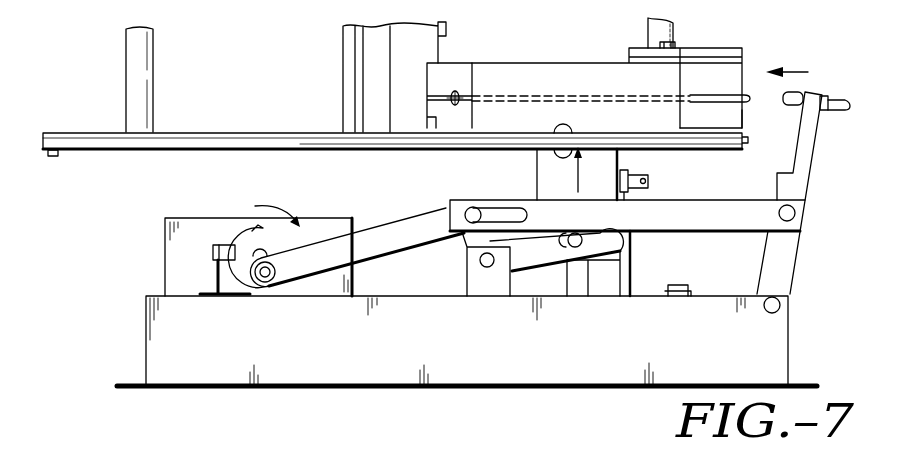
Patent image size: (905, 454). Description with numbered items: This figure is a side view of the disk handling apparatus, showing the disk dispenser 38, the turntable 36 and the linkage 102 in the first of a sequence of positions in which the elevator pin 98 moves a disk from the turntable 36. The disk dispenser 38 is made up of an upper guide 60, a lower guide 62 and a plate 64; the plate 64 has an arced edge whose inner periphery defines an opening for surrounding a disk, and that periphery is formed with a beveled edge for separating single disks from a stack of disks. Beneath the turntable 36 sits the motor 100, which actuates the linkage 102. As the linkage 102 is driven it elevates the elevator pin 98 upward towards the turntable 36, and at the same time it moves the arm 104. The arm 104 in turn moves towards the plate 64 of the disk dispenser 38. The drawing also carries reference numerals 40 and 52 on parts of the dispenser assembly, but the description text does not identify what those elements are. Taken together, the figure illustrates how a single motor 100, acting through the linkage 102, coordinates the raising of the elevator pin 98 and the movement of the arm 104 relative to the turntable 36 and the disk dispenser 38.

The turntable 36 is at (72, 133).
The disk dispenser 38 is at (545, 77).
The piston rod 40 is at (608, 93).
The clamp block 52 is at (343, 42).
The upper guide 60 is at (450, 77).
The lower guide 62 is at (713, 115).
The plate 64 is at (750, 98).
The elevator pin 98 is at (541, 188).
The motor 100 is at (182, 264).
The linkage 102 is at (400, 235).
The arm 104 is at (808, 143).